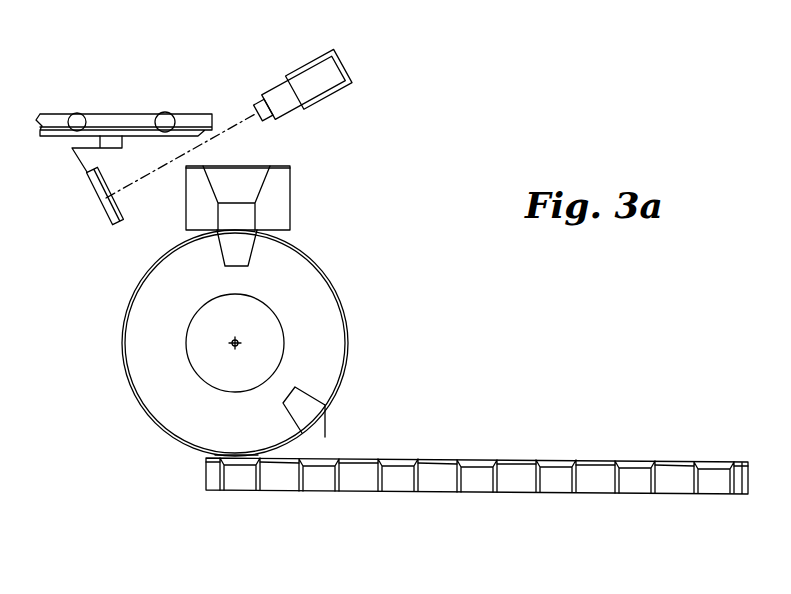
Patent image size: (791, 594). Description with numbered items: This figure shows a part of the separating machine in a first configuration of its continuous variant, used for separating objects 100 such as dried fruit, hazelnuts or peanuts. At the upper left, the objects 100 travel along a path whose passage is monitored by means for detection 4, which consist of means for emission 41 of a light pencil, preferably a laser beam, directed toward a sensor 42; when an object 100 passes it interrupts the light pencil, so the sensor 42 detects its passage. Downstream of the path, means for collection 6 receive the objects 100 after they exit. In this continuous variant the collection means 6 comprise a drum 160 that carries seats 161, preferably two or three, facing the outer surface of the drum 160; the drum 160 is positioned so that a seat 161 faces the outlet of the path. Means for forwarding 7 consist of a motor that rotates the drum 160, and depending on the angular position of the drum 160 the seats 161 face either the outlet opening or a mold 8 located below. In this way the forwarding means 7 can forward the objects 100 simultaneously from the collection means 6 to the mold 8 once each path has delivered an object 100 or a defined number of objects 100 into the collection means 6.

The objects 100 is at (170, 112).
The means for emission 41 is at (333, 70).
The sensor 42 is at (92, 191).
The means for detection 4 is at (365, 120).
The means for collection 6 is at (328, 203).
The means for forwarding 7 is at (277, 343).
The drum 160 is at (337, 349).
The seats 161 is at (233, 253).
The mold 8 is at (572, 450).